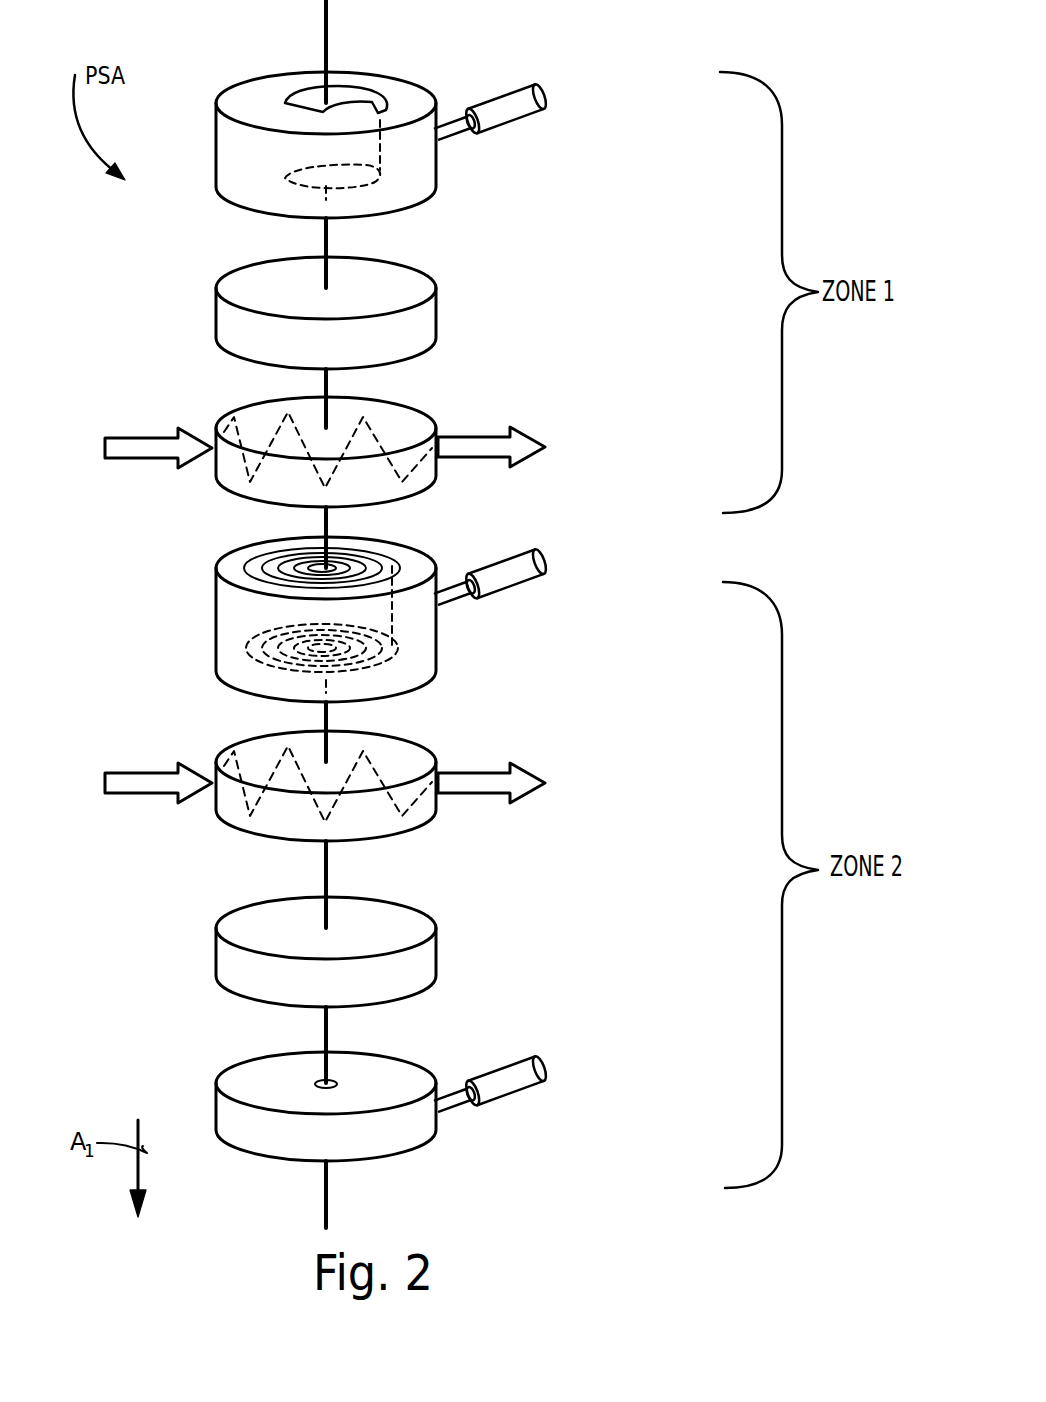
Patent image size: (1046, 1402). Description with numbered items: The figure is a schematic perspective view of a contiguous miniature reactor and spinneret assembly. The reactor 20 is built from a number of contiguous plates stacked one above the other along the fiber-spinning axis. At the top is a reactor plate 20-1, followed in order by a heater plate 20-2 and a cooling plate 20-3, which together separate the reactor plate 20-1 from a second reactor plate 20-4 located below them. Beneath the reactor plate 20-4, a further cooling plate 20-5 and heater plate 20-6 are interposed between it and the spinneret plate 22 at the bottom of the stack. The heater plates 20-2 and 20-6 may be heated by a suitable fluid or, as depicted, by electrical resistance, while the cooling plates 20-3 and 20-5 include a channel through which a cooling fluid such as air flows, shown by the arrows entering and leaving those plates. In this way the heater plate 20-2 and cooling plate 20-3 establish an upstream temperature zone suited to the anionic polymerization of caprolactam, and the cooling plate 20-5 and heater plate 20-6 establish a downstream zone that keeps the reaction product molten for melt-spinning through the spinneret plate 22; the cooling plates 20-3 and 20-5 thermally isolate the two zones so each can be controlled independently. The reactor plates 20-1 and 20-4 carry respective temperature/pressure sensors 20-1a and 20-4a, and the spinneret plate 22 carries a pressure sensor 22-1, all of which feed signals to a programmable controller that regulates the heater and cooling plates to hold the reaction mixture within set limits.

The reactor 20 is at (580, 74).
The reactor plate 20-1 is at (262, 169).
The temperature/pressure sensor 20-1a is at (488, 112).
The heater plate 20-2 is at (332, 351).
The cooling plate 20-3 is at (305, 490).
The reactor plate 20-4 is at (262, 625).
The temperature/pressure sensor 20-4a is at (558, 620).
The cooling plate 20-5 is at (305, 829).
The heater plate 20-6 is at (332, 991).
The spinneret plate 22 is at (314, 1149).
The pressure sensor 22-1 is at (517, 1085).